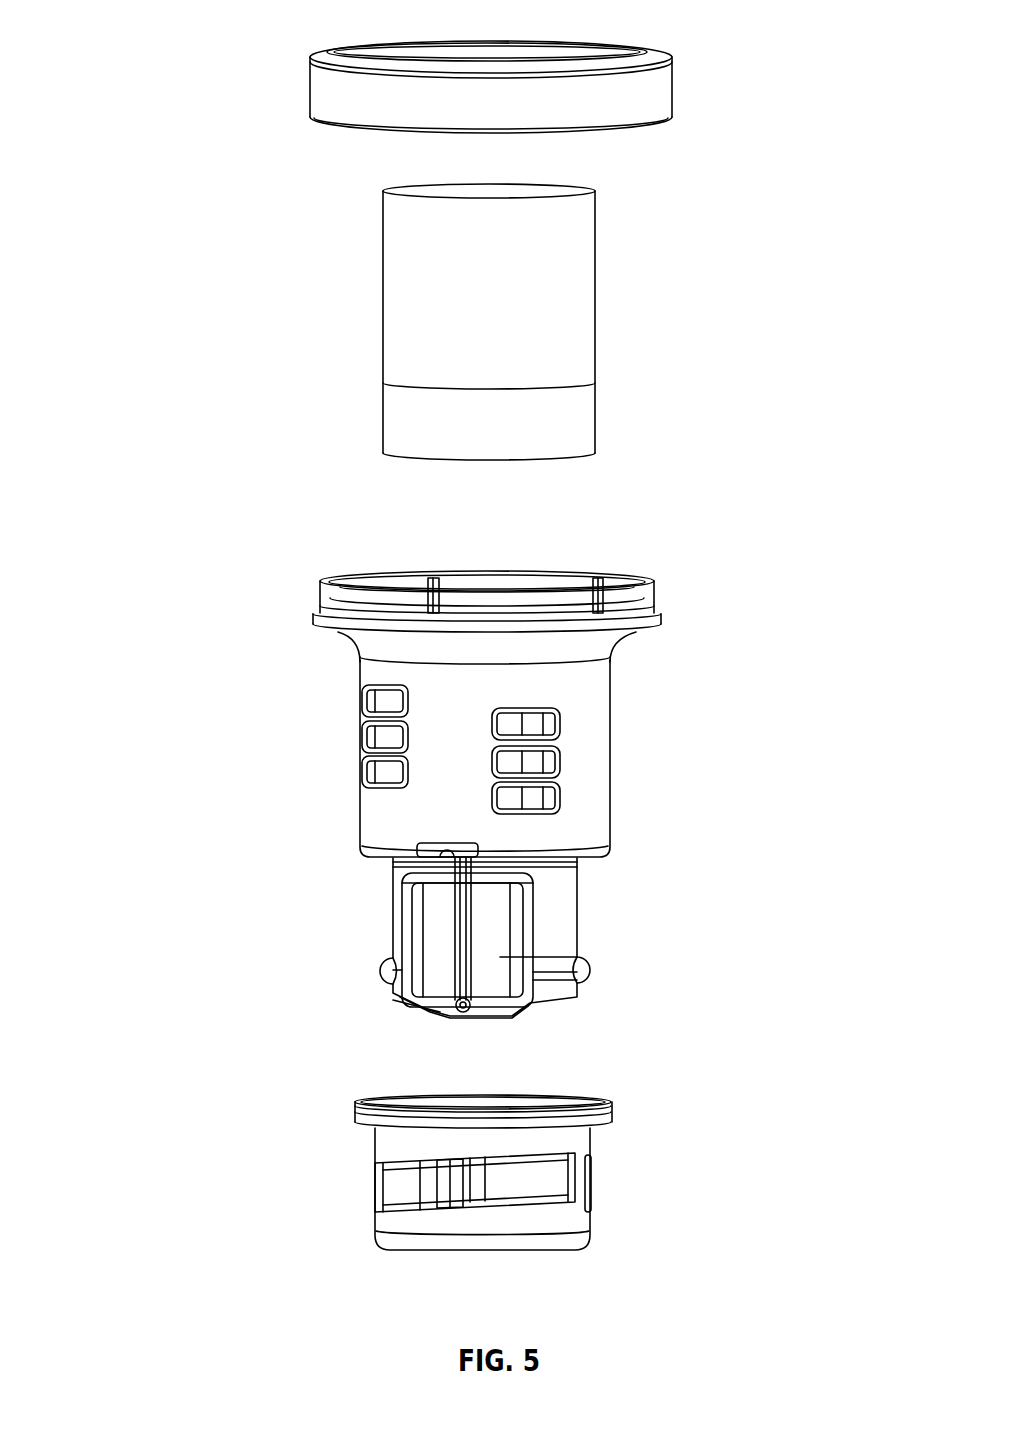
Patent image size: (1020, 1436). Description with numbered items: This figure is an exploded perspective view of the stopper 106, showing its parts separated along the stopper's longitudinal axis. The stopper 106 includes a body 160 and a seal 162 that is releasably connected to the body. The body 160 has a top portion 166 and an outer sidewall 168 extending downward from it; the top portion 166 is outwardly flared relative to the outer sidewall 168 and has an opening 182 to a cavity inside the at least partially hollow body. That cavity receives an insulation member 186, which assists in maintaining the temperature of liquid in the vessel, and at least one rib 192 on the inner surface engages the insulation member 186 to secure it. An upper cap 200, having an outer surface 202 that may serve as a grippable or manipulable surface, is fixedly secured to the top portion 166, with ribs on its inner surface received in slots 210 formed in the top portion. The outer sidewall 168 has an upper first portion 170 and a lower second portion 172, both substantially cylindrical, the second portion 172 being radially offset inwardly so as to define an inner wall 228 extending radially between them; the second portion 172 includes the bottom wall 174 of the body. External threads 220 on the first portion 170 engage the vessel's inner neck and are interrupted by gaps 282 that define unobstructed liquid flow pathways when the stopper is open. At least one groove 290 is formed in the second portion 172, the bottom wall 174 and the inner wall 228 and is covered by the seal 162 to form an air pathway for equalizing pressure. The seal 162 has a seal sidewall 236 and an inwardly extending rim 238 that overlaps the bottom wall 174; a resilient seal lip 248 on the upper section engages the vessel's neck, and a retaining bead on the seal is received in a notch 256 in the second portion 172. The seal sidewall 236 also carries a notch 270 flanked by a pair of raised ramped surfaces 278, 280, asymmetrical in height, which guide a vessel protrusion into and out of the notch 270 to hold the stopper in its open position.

The stopper 106 is at (200, 26).
The upper cap 200 is at (495, 95).
The outer surface 202 is at (330, 106).
The insulation member 186 is at (400, 355).
The opening 182 is at (507, 570).
The slots 210 is at (430, 586).
The top portion 166 is at (526, 558).
The first portion 170 is at (597, 713).
The body 160 is at (509, 773).
The external threads 220 is at (370, 735).
The gaps 282 is at (597, 786).
The outer sidewall 168 is at (378, 812).
The inner wall 228 is at (378, 857).
The second portion 172 is at (560, 915).
The rib 192 is at (535, 961).
The groove 290 is at (452, 918).
The notch 256 is at (395, 976).
The bottom wall 174 is at (495, 1018).
The seal lip 248 is at (372, 1123).
The seal 162 is at (469, 1194).
The raised ramped surface 278 is at (387, 1190).
The seal sidewall 236 is at (577, 1213).
The notch 270 is at (447, 1187).
The rim 238 is at (464, 1251).
The raised ramped surface 280 is at (518, 1186).